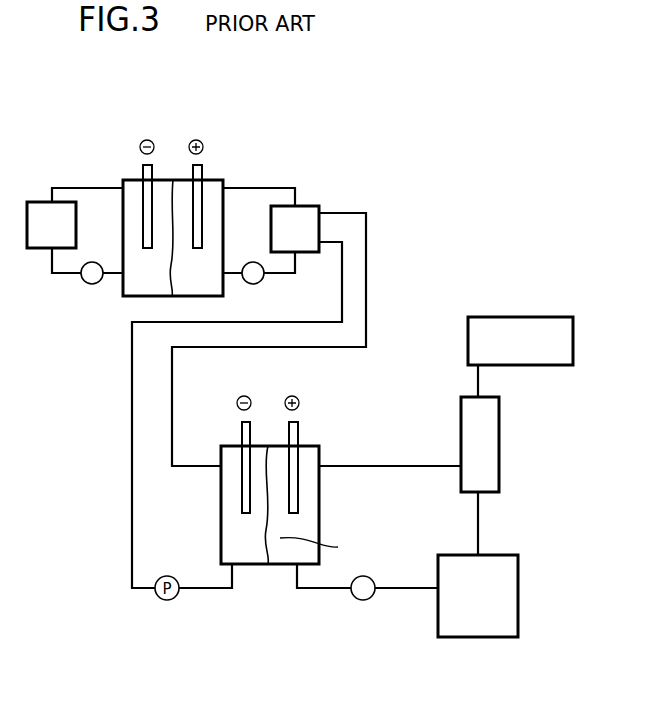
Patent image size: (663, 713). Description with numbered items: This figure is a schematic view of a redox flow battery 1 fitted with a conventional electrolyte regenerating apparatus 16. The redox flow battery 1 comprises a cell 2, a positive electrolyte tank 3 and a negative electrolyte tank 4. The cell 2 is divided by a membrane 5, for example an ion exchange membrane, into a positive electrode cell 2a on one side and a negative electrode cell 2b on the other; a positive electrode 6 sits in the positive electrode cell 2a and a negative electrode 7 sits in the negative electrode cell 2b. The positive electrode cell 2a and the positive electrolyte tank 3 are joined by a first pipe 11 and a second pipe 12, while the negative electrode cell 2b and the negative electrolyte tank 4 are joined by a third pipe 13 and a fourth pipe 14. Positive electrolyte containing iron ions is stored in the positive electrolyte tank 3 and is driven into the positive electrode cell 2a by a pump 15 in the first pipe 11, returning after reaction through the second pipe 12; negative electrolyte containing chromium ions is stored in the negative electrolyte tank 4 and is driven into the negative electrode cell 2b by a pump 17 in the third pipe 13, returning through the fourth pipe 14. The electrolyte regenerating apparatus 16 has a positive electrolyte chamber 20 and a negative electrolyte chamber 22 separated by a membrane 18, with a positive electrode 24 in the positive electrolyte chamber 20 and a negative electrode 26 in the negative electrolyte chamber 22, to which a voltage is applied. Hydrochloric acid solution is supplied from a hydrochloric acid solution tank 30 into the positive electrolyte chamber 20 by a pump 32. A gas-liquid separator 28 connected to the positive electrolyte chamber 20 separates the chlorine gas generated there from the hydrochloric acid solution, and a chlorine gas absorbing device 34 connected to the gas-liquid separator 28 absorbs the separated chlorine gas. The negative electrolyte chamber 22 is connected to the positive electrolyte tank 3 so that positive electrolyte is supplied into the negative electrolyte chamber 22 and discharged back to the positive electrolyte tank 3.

The redox flow battery 1 is at (258, 167).
The cell 2 is at (171, 166).
The positive electrode cell 2a is at (212, 288).
The negative electrode cell 2b is at (135, 290).
The positive electrolyte tank 3 is at (303, 213).
The negative electrolyte tank 4 is at (42, 208).
The membrane 5 is at (170, 283).
The positive electrode 6 is at (197, 167).
The negative electrode 7 is at (146, 172).
The first pipe 11 is at (290, 280).
The second pipe 12 is at (258, 188).
The third pipe 13 is at (63, 275).
The fourth pipe 14 is at (82, 188).
The pump 15 is at (258, 284).
The electrolyte regenerating apparatus 16 is at (245, 616).
The pump 17 is at (90, 285).
The membrane 18 is at (280, 568).
The positive electrolyte chamber 20 is at (322, 446).
The negative electrolyte chamber 22 is at (218, 456).
The positive electrode 24 is at (299, 423).
The negative electrode 26 is at (241, 430).
The gas-liquid separator 28 is at (490, 445).
The hydrochloric acid solution tank 30 is at (477, 625).
The pump 32 is at (370, 598).
The chlorine gas absorbing device 34 is at (497, 324).